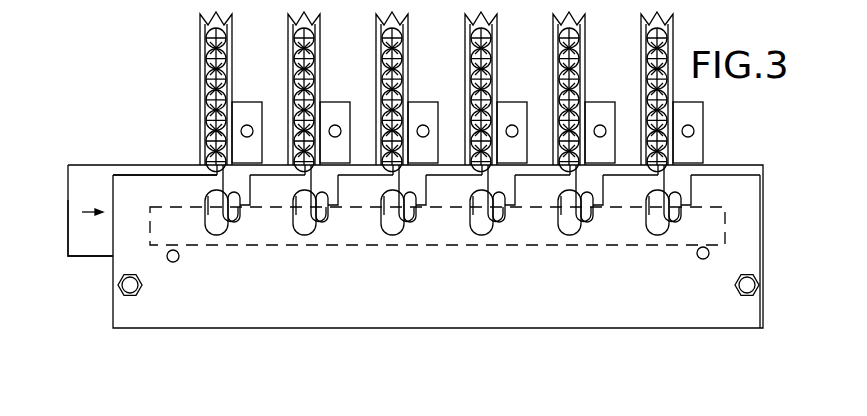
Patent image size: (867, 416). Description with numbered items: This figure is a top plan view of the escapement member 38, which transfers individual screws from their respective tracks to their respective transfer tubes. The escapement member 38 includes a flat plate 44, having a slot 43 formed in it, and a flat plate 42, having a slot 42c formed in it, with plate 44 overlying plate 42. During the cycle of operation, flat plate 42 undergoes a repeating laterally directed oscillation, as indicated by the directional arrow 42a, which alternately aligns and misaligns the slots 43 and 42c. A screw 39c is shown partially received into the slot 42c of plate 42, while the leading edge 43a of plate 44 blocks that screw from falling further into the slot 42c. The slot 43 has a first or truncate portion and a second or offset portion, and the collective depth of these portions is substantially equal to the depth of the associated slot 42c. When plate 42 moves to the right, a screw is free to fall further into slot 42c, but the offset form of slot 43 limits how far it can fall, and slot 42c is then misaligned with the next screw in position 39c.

The escapement member 38 is at (105, 307).
The screw 39c is at (210, 158).
The flat plate 42 is at (103, 165).
The directional arrow 42a is at (85, 214).
The slot 42c is at (233, 216).
The slot 43 is at (322, 218).
The leading edge 43a is at (193, 178).
The flat plate 44 is at (217, 320).